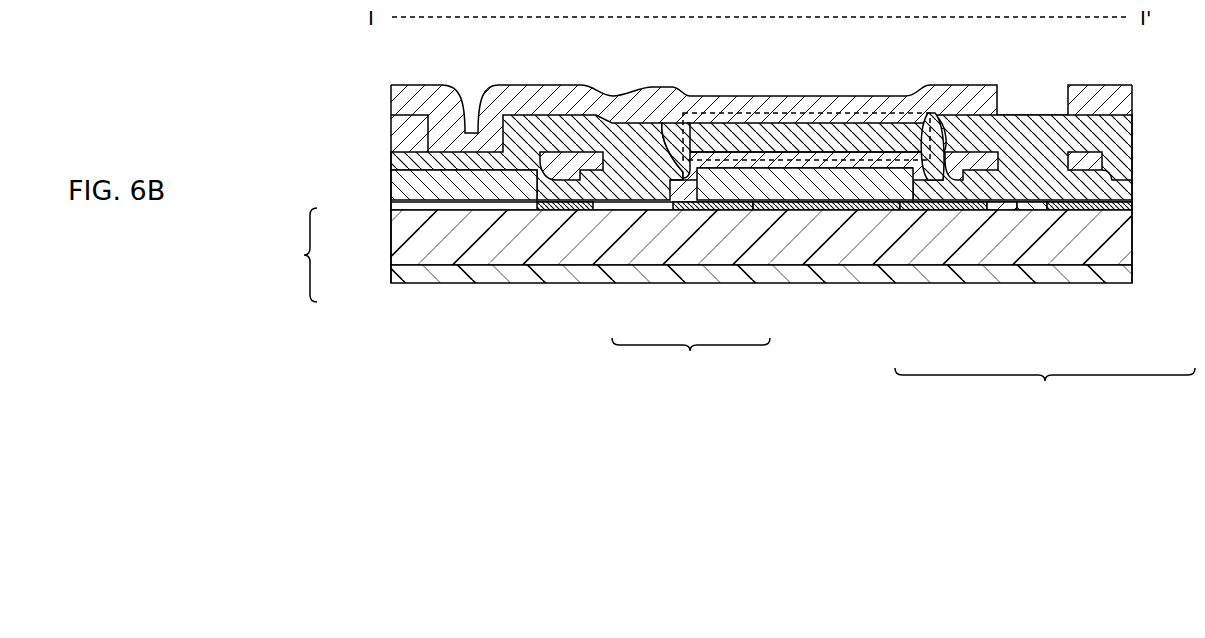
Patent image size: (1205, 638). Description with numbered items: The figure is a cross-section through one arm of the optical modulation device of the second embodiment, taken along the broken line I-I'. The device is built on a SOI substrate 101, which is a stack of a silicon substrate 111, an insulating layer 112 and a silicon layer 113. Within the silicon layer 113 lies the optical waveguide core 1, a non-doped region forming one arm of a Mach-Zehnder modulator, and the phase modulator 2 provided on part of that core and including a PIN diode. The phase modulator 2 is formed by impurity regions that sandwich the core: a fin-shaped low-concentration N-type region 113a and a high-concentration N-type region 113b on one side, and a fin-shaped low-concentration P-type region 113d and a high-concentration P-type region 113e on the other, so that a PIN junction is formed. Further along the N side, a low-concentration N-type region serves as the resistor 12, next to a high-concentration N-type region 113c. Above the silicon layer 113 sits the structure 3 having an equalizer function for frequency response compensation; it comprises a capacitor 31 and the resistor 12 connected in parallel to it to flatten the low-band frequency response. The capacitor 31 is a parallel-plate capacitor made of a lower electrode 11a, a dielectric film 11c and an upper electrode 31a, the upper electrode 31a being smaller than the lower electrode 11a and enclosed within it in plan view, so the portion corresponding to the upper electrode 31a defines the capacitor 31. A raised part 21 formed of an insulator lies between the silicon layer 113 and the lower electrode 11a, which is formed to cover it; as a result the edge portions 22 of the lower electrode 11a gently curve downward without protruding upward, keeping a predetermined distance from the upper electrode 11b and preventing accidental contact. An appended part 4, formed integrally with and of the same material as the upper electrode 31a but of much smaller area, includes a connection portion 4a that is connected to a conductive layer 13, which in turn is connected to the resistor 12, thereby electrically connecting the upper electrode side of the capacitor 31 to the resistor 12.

The optical waveguide core 1 is at (1033, 197).
The phase modulator 2 is at (1045, 390).
The structure having an equalizer function 3 is at (691, 359).
The appended part 4 is at (634, 110).
The connection portion 4a is at (443, 130).
The lower electrode 11a is at (860, 165).
The upper electrode 11b is at (757, 104).
The dielectric film 11c is at (830, 140).
The resistor 12 is at (627, 204).
The conductive layer 13 is at (403, 160).
The raised part 21 is at (793, 185).
The edge portion 22 is at (670, 120).
The capacitor 31 is at (738, 158).
The upper electrode 31a is at (860, 112).
The SOI substrate 101 is at (287, 255).
The silicon substrate 111 is at (403, 274).
The insulating layer 112 is at (403, 246).
The silicon layer 113 is at (529, 203).
The low-concentration N-type region 113a is at (1002, 203).
The high-concentration N-type region 113b is at (925, 203).
The high-concentration N-type region 113c is at (557, 206).
The low-concentration P-type region 113d is at (1060, 203).
The high-concentration P-type region 113e is at (1100, 203).